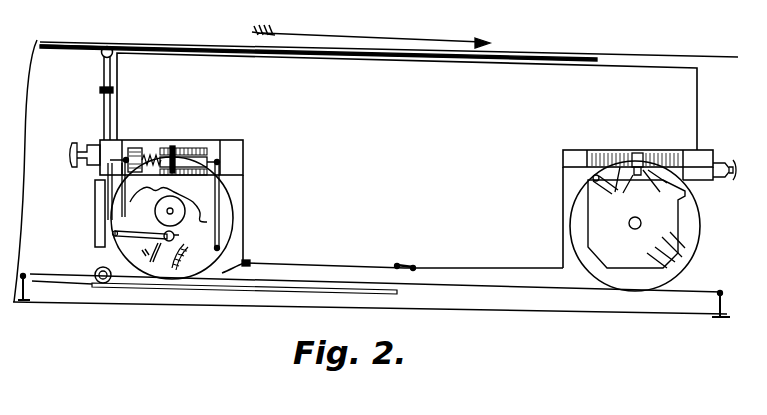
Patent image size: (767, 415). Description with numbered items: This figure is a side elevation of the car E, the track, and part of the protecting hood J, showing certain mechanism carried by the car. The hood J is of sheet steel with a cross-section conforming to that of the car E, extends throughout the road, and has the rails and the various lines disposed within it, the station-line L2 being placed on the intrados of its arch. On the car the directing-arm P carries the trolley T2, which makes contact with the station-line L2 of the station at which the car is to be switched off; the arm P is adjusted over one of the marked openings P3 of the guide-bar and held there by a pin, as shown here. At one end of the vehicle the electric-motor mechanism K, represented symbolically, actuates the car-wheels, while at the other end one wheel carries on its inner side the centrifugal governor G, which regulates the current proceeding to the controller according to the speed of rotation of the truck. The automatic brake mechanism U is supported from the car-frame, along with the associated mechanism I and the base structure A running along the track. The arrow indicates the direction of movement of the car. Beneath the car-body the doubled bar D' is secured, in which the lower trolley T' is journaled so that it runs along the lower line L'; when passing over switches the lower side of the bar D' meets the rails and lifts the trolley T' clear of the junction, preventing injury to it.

The hood J is at (389, 48).
The car E is at (407, 160).
The station-line L2 is at (63, 50).
The trolley T2 is at (100, 54).
The directing-arm P is at (103, 116).
The openings P3 is at (114, 90).
The left driving mechanism I is at (156, 201).
The automatic brake mechanism U is at (186, 212).
The centrifugal governor G is at (151, 250).
The electric-motor mechanism K is at (649, 220).
The base rail A is at (371, 286).
The doubled bar D' is at (319, 254).
The lower cord L' is at (62, 301).
The trolley T' is at (244, 295).